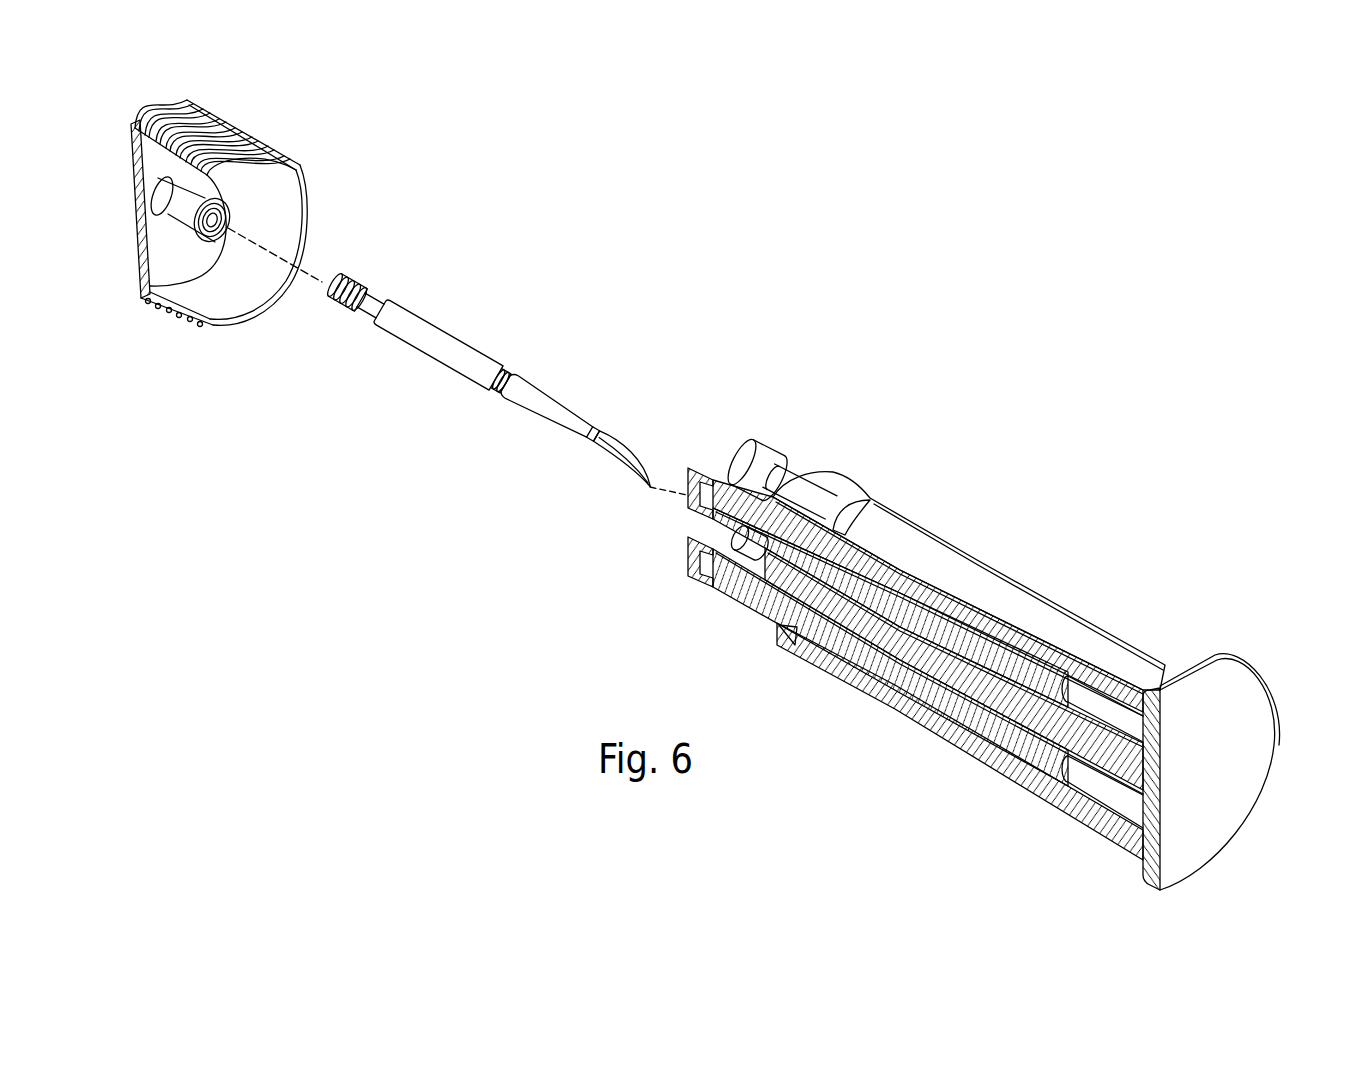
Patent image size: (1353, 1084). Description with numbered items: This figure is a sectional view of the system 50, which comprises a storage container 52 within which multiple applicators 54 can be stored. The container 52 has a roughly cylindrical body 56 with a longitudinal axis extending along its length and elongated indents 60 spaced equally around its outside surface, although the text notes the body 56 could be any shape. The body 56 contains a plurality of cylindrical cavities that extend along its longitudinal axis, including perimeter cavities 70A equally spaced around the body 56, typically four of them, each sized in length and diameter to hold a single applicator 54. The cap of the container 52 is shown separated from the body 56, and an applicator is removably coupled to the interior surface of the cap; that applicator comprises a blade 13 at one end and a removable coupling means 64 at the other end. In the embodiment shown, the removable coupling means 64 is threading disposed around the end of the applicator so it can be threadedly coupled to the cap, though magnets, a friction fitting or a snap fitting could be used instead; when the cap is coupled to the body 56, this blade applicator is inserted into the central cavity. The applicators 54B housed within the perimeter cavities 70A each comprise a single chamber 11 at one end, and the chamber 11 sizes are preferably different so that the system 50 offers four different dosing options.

The system 50 is at (798, 228).
The storage container 52 is at (928, 638).
The applicator 54 is at (502, 342).
The applicator 54B is at (700, 512).
The body 56 is at (840, 492).
The elongated indents 60 is at (1058, 625).
The removable coupling means 64 is at (338, 268).
The perimeter cavity 70A is at (1103, 730).
The chamber 11 is at (700, 465).
The blade 13 is at (617, 436).